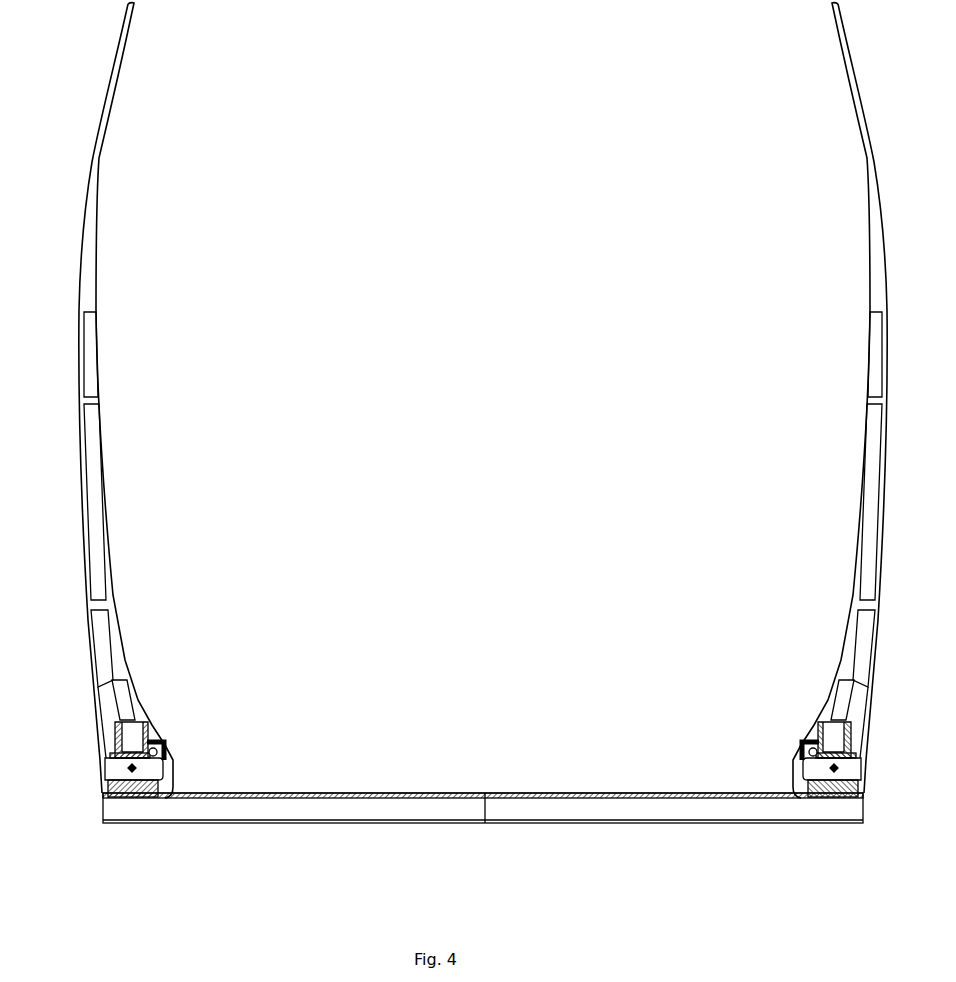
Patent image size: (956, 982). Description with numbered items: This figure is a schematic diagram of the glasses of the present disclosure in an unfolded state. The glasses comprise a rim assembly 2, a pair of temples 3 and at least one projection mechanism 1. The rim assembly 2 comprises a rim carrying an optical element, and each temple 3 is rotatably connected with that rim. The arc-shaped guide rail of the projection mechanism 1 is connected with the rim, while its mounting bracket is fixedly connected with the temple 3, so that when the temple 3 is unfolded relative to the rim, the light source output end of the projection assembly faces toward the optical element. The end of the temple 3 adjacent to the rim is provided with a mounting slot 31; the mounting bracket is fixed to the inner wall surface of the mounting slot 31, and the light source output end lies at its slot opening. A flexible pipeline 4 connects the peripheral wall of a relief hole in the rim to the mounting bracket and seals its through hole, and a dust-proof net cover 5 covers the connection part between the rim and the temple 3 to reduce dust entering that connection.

The projection mechanism 1 is at (102, 782).
The rim assembly 2 is at (320, 800).
The temple 3 is at (95, 742).
The mounting slot 31 is at (98, 702).
The flexible pipeline 4 is at (130, 798).
The dust-proof net cover 5 is at (167, 797).